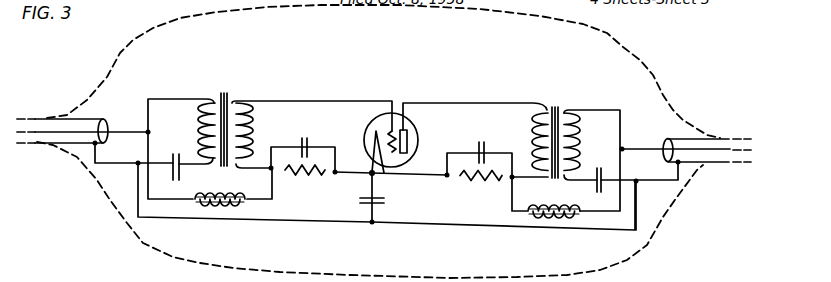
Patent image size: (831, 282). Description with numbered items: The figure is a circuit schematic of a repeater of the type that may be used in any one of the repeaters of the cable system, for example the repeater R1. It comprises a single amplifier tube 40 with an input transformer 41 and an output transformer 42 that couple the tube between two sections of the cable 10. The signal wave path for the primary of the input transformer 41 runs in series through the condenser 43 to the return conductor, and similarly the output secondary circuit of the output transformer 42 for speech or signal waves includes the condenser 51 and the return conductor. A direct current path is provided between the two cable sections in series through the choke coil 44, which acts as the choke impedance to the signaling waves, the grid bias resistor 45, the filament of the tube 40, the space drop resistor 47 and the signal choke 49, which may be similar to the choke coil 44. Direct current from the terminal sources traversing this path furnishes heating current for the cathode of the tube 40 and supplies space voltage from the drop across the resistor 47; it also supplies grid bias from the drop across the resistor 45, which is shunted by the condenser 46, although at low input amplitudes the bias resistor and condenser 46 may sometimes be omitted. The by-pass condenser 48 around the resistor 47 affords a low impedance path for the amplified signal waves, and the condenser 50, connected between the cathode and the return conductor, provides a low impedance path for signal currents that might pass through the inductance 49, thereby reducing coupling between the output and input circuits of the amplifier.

The cable 10 is at (42, 118).
The amplifier tube 40 is at (391, 110).
The input transformer 41 is at (223, 97).
The output transformer 42 is at (555, 105).
The condenser 43 is at (187, 133).
The choke coil 44 is at (248, 207).
The grid bias resistor 45 is at (297, 176).
The condenser 46 is at (310, 142).
The space drop resistor 47 is at (478, 184).
The by-pass condenser 48 is at (488, 150).
The signal choke 49 is at (527, 209).
The condenser 50 is at (385, 206).
The condenser 51 is at (597, 167).
The repeater R1 is at (394, 106).